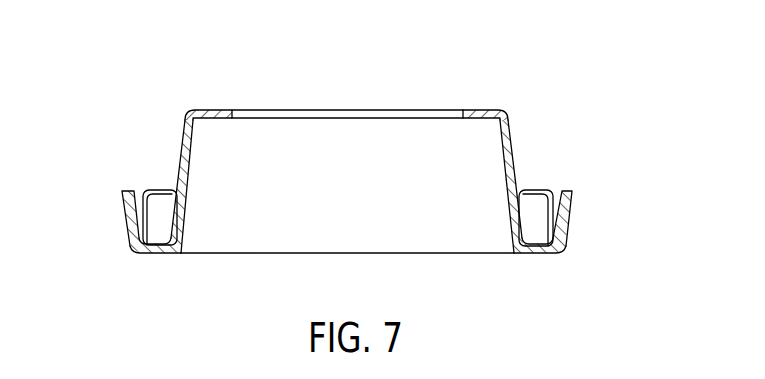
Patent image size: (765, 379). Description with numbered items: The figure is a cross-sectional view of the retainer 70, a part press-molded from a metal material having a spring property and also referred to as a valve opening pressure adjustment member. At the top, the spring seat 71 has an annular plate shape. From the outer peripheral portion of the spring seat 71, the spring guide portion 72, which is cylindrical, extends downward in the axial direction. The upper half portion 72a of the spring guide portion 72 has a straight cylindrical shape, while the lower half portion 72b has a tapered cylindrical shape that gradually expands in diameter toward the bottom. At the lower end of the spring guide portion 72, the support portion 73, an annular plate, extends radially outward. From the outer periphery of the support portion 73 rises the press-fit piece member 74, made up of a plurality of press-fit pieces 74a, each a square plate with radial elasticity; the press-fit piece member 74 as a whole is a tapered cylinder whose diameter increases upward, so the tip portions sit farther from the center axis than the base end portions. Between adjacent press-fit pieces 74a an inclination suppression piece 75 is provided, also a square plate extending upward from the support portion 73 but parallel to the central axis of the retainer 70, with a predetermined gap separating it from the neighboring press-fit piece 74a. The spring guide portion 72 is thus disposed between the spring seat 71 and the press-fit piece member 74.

The retainer 70 is at (515, 83).
The spring seat 71 is at (480, 112).
The spring guide portion 72 is at (382, 202).
The upper half portion 72a is at (508, 130).
The lower half portion 72b is at (508, 203).
The support portion 73 is at (535, 253).
The press-fit piece member 74 is at (355, 223).
The press-fit piece 74a is at (120, 210).
The inclination suppression piece 75 is at (165, 195).